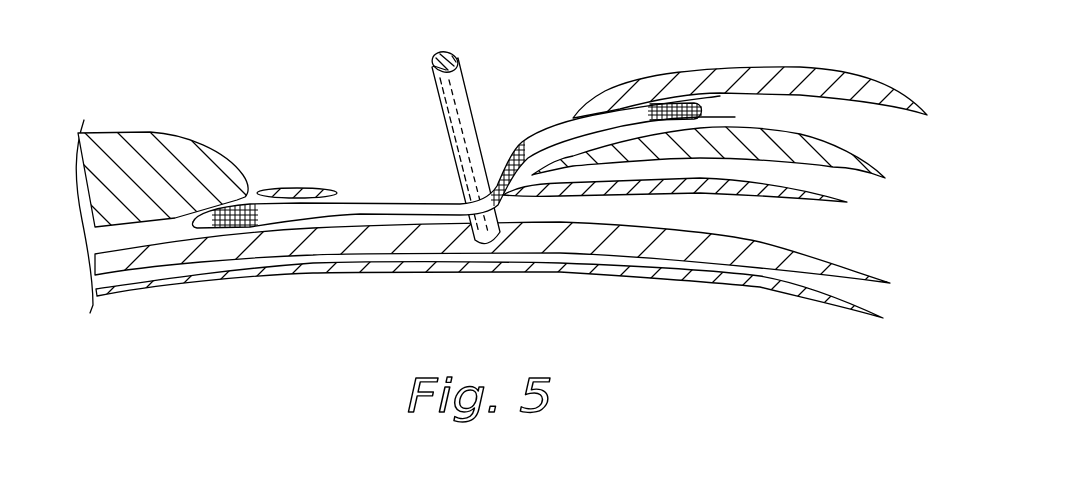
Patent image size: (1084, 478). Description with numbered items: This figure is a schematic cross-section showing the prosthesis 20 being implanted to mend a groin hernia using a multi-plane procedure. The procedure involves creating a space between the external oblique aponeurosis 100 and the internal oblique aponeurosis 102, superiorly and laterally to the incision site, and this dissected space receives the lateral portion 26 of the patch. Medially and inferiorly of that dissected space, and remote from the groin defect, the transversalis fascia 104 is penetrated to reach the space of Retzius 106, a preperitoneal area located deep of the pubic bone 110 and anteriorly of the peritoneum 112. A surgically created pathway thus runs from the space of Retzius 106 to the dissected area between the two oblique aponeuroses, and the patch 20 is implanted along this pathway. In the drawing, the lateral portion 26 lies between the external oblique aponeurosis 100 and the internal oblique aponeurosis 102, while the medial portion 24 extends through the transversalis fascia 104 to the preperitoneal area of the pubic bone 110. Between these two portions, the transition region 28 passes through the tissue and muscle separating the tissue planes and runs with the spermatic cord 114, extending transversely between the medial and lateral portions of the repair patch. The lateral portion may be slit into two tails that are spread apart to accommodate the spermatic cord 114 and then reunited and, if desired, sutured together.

The prosthesis 20 is at (407, 198).
The medial portion 24 is at (661, 103).
The lateral portion 26 is at (245, 207).
The transition region 28 is at (508, 152).
The external oblique aponeurosis 100 is at (812, 67).
The internal oblique aponeurosis 102 is at (881, 167).
The transversalis fascia 104 is at (323, 187).
The space of Retzius 106 is at (178, 226).
The pubic bone 110 is at (157, 132).
The peritoneum 112 is at (813, 297).
The spermatic cord 114 is at (463, 68).